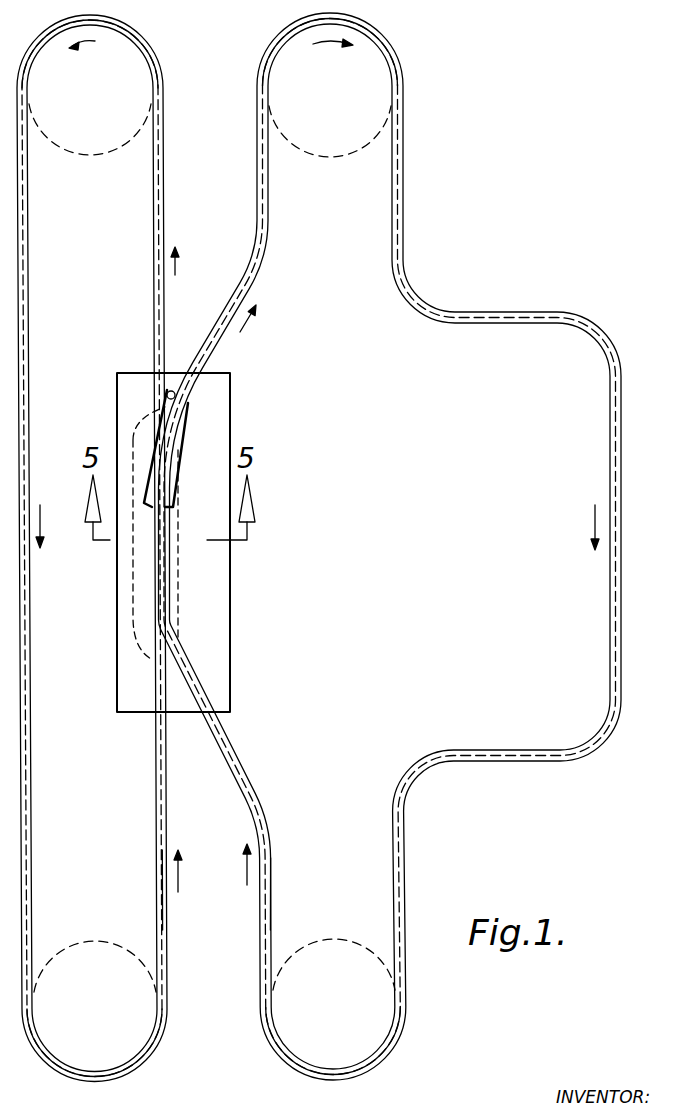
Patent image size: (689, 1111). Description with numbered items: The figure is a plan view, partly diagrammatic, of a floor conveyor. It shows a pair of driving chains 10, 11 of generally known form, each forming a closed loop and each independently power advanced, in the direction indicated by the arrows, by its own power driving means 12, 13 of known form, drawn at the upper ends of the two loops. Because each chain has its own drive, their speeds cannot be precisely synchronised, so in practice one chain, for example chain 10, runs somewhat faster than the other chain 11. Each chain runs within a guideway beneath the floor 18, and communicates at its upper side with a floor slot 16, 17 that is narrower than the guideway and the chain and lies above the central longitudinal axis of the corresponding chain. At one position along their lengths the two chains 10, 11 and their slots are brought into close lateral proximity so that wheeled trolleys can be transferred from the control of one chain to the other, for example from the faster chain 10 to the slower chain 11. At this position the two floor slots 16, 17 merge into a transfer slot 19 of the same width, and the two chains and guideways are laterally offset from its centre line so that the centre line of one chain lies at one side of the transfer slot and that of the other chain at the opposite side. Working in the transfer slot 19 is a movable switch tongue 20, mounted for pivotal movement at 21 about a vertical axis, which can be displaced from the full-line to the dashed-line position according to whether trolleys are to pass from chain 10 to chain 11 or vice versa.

The driving chain 10 is at (262, 278).
The driving chain 11 is at (153, 276).
The power driving means 12 is at (330, 98).
The power driving means 13 is at (90, 98).
The slot 16 is at (272, 890).
The slot 17 is at (152, 877).
The floor 18 is at (397, 530).
The transfer slot 19 is at (165, 540).
The switch tongue 20 is at (178, 486).
The pivot 21 is at (172, 391).